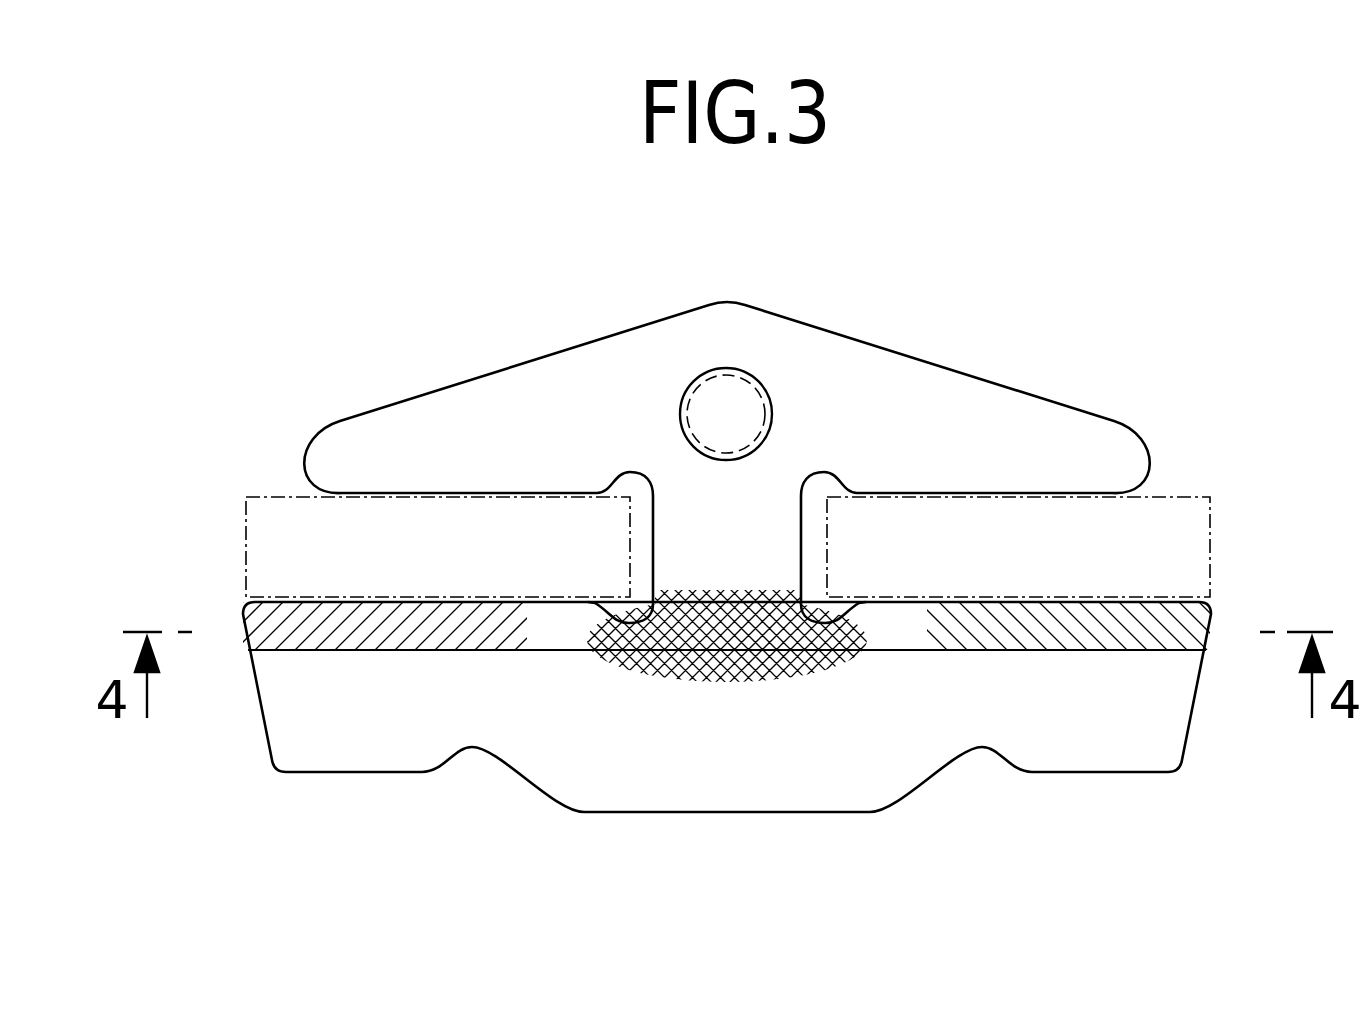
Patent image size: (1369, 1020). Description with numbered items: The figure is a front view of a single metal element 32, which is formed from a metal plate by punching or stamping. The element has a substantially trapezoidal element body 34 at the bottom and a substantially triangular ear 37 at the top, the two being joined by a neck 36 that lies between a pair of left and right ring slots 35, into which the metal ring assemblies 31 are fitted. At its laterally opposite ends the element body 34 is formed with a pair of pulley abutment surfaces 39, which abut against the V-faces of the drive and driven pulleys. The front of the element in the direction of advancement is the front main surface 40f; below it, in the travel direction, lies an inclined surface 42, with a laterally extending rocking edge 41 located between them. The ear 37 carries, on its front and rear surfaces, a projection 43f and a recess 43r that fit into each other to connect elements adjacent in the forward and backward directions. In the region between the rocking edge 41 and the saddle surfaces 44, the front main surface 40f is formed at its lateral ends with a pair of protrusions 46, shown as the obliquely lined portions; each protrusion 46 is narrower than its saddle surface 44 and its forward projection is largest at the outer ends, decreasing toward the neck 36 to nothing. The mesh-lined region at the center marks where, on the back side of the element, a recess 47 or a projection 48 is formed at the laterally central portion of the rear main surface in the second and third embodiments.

The metal ring assembly 31 is at (277, 498).
The metal element 32 is at (935, 343).
The element body 34 is at (1094, 680).
The ring slot 35 is at (537, 569).
The neck 36 is at (777, 557).
The ear 37 is at (983, 423).
The pulley abutment surface 39 is at (265, 740).
The front main surface 40f is at (757, 525).
The rocking edge 41 is at (887, 652).
The inclined surface 42 is at (550, 717).
The projection 43f is at (762, 383).
The recess 43r is at (680, 413).
The saddle surface 44 is at (315, 602).
The protrusion 46 is at (332, 633).
The recess 47 is at (720, 680).
The projection 48 is at (718, 637).